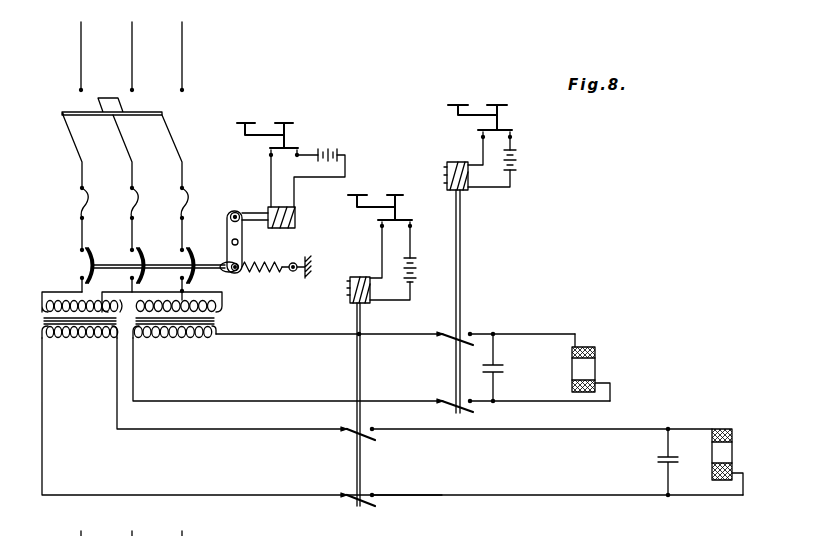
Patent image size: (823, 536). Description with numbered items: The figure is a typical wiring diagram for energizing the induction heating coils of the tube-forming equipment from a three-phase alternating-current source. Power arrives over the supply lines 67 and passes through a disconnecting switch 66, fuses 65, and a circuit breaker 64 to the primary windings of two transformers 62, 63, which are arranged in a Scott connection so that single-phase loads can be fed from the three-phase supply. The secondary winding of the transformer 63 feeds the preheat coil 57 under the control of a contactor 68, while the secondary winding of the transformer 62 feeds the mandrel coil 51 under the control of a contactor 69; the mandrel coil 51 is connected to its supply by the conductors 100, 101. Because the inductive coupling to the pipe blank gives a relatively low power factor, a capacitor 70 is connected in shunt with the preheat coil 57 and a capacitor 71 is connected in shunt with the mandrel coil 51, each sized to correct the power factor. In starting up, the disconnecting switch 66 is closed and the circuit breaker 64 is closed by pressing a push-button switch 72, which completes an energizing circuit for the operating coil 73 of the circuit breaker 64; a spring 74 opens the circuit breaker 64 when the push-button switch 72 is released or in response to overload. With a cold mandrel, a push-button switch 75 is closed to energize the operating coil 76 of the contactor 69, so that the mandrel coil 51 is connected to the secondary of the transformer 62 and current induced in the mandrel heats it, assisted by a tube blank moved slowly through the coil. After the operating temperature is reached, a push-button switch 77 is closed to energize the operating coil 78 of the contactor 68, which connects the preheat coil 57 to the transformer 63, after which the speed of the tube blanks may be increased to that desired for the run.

The mandrel coil 51 is at (729, 451).
The preheat coil 57 is at (592, 363).
The transformer 62 is at (41, 323).
The transformer 63 is at (216, 323).
The circuit breaker 64 is at (151, 264).
The fuses 65 is at (186, 205).
The disconnecting switch 66 is at (70, 113).
The supply lines 67 is at (204, 44).
The contactor 68 is at (461, 299).
The contactor 69 is at (362, 375).
The capacitor 70 is at (503, 370).
The capacitor 71 is at (656, 459).
The push-button switch 72 is at (285, 135).
The operating coil 73 is at (292, 230).
The spring 74 is at (257, 270).
The push-button switch 75 is at (401, 203).
The operating coil 76 is at (350, 299).
The push-button switch 77 is at (500, 122).
The operating coil 78 is at (446, 170).
The conductor 100 is at (539, 432).
The conductor 101 is at (580, 498).